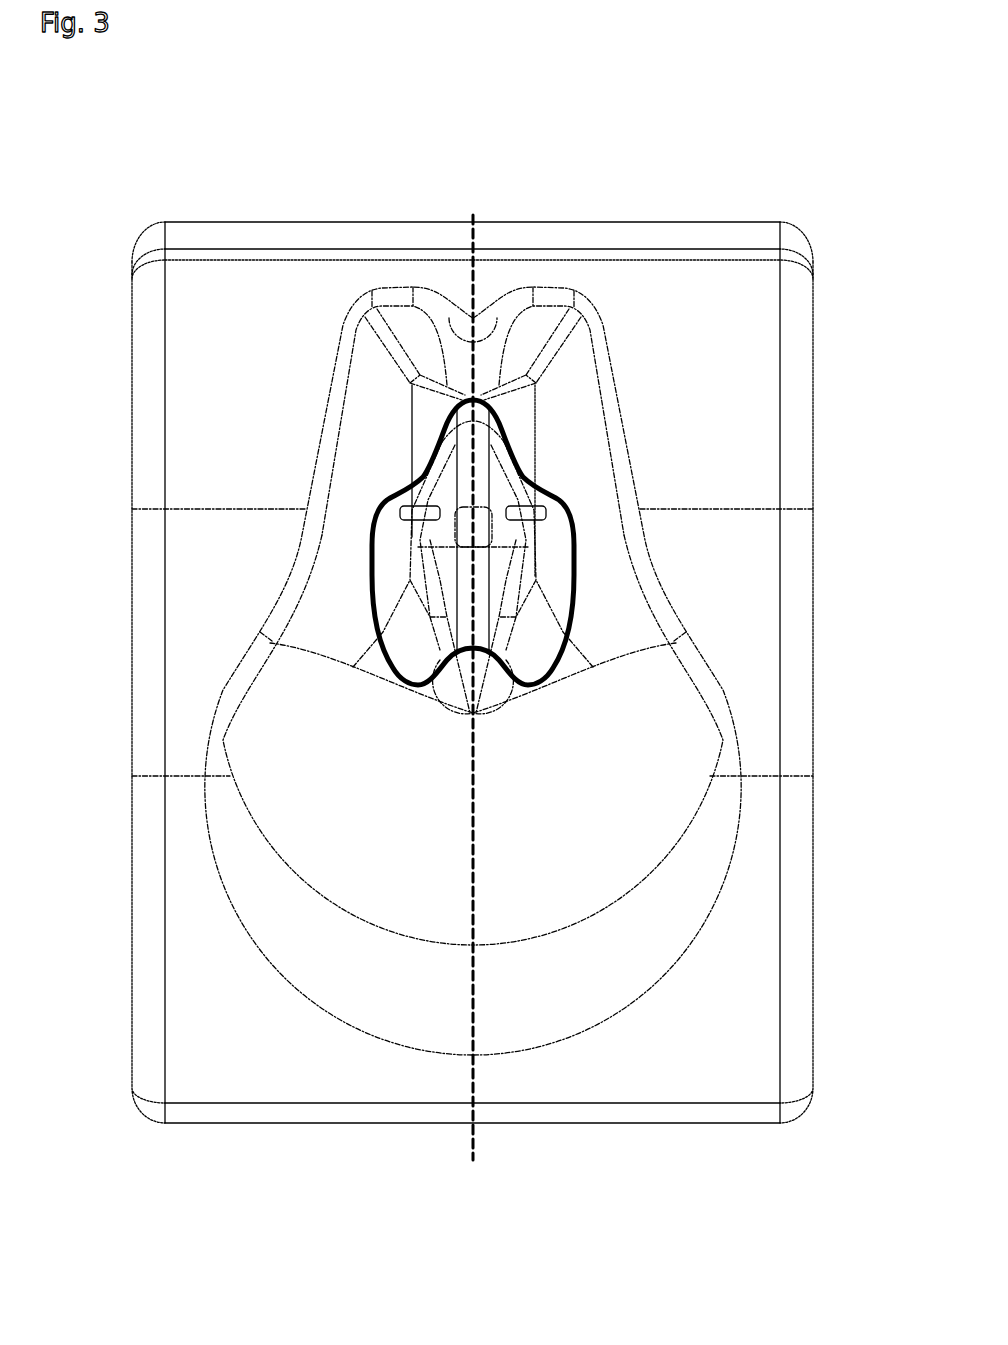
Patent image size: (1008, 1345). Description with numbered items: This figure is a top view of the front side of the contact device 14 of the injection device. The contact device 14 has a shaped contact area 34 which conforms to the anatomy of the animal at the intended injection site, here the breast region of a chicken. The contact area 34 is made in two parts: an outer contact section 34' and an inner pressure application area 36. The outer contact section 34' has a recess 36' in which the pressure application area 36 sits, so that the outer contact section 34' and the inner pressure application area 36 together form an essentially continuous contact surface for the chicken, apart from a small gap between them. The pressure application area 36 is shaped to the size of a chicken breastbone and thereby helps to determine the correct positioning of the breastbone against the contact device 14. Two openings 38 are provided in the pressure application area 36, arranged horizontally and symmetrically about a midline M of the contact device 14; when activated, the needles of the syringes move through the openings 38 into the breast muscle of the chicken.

The contact device 14 is at (405, 236).
The contact area 34 is at (538, 671).
The outer contact section 34' is at (553, 740).
The pressure application area 36 is at (640, 549).
The recess 36' is at (625, 542).
The openings 38 is at (400, 513).
The midline M is at (473, 1008).